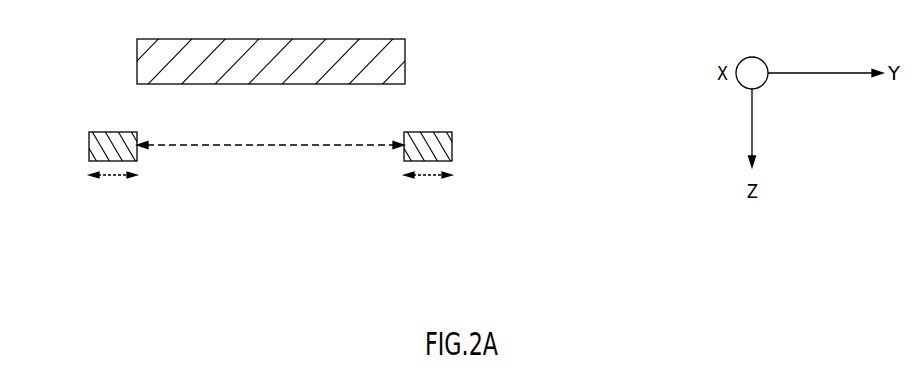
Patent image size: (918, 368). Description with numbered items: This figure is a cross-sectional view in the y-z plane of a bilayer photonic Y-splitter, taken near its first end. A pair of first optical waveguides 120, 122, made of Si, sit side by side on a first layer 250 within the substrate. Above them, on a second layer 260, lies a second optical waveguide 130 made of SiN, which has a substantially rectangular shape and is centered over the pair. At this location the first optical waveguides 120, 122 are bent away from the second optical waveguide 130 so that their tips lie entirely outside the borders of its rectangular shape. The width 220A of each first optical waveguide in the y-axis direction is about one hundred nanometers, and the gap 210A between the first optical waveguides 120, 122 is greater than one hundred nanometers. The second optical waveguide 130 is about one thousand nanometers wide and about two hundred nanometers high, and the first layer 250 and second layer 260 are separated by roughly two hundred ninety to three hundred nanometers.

The second optical waveguide 130 is at (137, 66).
The first optical waveguide 120 is at (89, 143).
The first optical waveguide 122 is at (452, 143).
The gap 210A is at (302, 145).
The width 220A is at (113, 170).
The second layer 260 is at (374, 52).
The first layer 250 is at (339, 158).